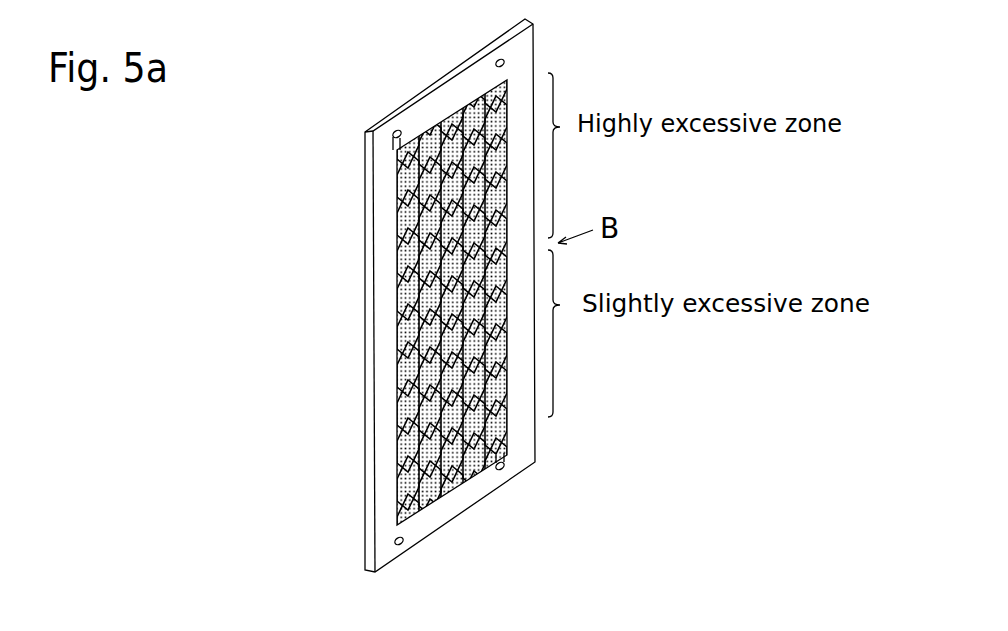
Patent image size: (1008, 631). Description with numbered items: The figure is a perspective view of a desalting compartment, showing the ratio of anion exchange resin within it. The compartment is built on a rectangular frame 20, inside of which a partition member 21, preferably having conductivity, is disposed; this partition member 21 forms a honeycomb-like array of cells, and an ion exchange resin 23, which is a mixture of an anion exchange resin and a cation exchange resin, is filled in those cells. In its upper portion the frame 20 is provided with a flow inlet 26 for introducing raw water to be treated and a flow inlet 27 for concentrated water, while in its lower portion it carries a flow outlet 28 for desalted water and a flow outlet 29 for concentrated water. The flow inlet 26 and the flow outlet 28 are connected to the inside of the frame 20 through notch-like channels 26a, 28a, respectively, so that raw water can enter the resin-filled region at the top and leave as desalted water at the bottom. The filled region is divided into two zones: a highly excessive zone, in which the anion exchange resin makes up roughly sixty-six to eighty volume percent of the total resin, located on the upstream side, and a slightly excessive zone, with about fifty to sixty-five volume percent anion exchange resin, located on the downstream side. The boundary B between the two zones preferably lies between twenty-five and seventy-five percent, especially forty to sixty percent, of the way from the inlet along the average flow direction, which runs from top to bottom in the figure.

The rectangular frame 20 is at (466, 90).
The partition member 21 is at (400, 297).
The ion exchange resin 23 is at (397, 207).
The flow inlet 26 is at (394, 132).
The notch-like channel 26a is at (404, 130).
The flow inlet 27 is at (505, 63).
The flow outlet 28 is at (502, 472).
The notch-like channel 28a is at (492, 466).
The flow outlet 29 is at (402, 550).